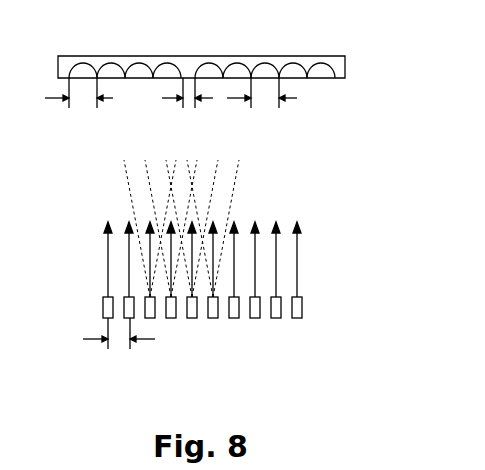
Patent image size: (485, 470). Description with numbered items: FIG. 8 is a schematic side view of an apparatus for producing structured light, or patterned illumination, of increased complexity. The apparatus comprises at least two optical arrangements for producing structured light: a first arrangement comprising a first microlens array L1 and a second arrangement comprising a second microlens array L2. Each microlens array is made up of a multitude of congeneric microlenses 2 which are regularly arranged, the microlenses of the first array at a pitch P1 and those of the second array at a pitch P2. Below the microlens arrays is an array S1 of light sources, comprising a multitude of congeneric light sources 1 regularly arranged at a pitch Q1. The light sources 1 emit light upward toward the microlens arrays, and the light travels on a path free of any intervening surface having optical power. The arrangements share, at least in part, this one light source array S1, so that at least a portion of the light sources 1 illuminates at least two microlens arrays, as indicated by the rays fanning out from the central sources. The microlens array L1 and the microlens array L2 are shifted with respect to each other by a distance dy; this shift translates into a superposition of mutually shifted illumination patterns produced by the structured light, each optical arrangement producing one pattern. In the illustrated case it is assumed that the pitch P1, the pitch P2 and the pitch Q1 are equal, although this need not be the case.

The microlens array L1 is at (92, 43).
The second microlens array L2 is at (292, 43).
The light sources 1 is at (297, 318).
The microlenses 2 is at (138, 80).
The array of light sources S1 is at (325, 301).
The pitch of microlenses P1 is at (79, 114).
The pitch of second microlens array P2 is at (262, 114).
The distance dy is at (187, 112).
The pitch of light sources Q1 is at (119, 355).